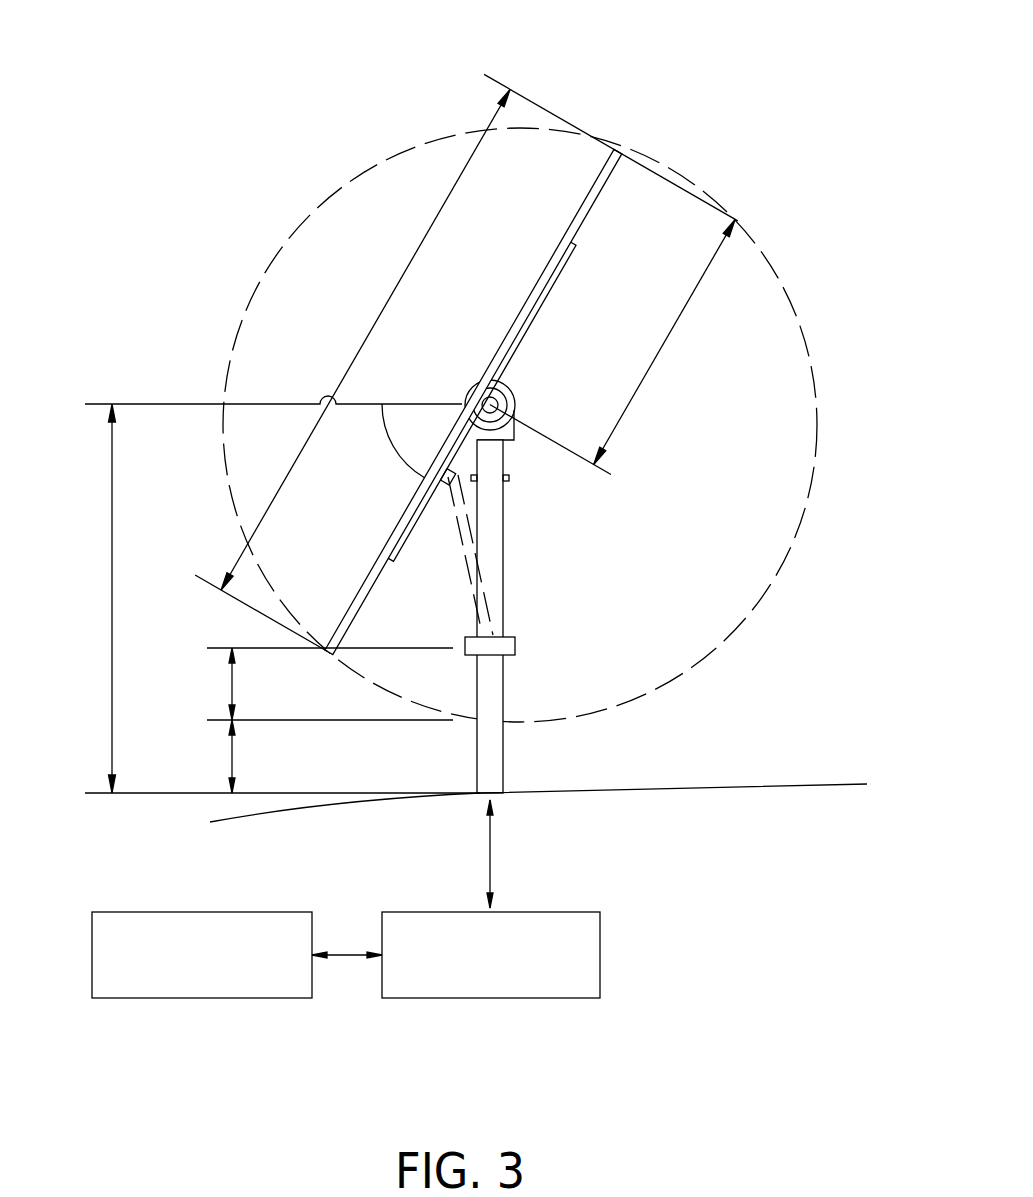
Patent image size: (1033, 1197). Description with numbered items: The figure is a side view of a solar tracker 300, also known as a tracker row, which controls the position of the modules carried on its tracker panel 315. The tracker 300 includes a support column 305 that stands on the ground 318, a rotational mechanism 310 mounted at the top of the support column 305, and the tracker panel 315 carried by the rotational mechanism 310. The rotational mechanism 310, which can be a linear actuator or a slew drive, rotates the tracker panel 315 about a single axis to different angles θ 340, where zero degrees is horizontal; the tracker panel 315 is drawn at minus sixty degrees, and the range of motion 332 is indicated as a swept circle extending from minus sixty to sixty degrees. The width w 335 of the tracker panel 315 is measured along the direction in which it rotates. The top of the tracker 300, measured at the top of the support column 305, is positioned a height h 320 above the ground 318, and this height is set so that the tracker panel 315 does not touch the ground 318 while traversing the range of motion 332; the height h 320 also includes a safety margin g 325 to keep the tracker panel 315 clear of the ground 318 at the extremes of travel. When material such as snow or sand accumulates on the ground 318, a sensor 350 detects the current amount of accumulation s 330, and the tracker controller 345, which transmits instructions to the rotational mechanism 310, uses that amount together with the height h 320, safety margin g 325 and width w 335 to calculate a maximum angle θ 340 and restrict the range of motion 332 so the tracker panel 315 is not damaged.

The tracker 300 is at (596, 81).
The support column 305 is at (505, 688).
The rotational mechanism 310 is at (513, 393).
The tracker panel 315 is at (561, 272).
The ground 318 is at (716, 788).
The height h 320 is at (112, 636).
The safety margin g 325 is at (232, 684).
The amount of accumulation s 330 is at (232, 759).
The range of motion 332 is at (330, 195).
The width w 335 is at (384, 305).
The angle θ 340 is at (388, 443).
The tracker controller 345 is at (559, 912).
The sensor 350 is at (222, 983).